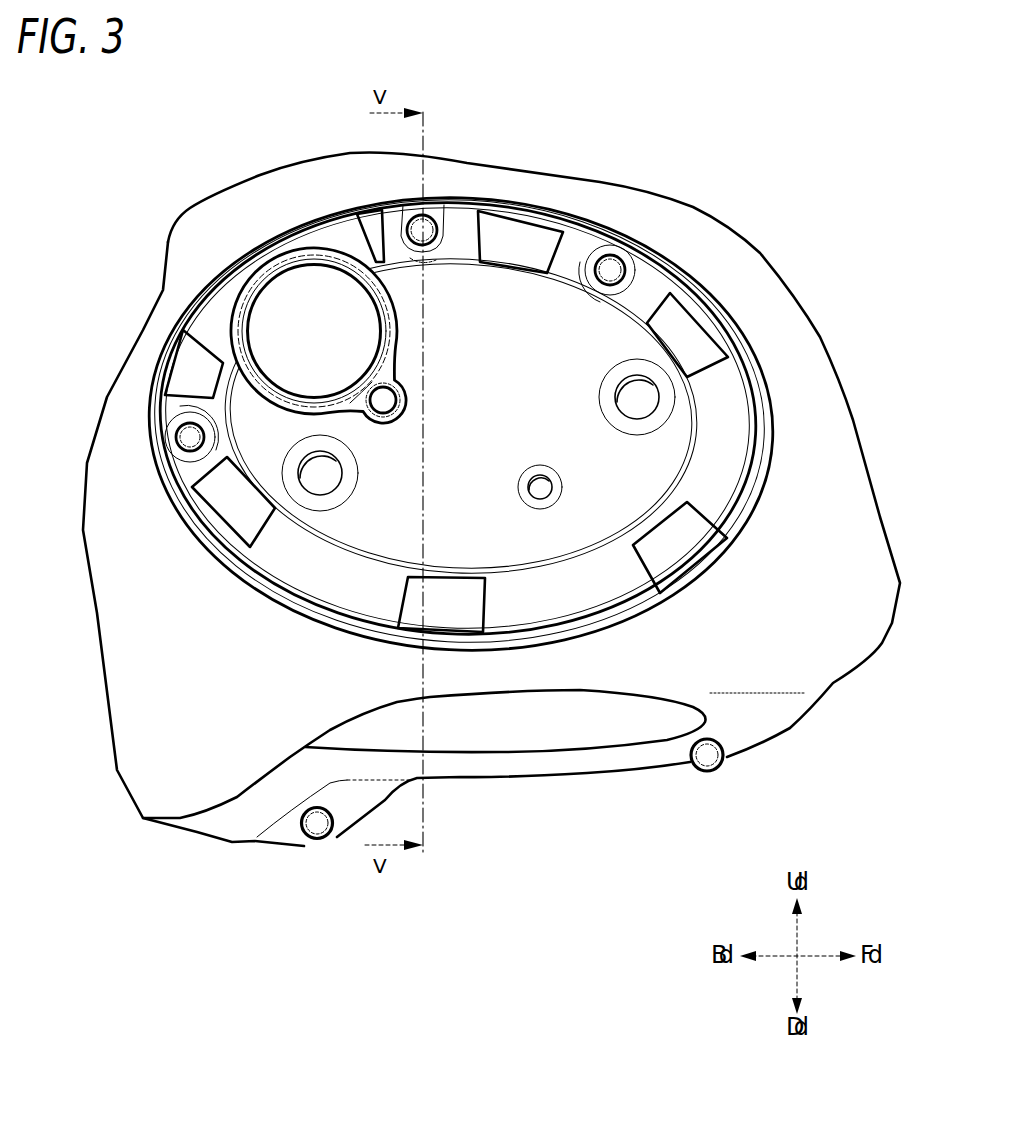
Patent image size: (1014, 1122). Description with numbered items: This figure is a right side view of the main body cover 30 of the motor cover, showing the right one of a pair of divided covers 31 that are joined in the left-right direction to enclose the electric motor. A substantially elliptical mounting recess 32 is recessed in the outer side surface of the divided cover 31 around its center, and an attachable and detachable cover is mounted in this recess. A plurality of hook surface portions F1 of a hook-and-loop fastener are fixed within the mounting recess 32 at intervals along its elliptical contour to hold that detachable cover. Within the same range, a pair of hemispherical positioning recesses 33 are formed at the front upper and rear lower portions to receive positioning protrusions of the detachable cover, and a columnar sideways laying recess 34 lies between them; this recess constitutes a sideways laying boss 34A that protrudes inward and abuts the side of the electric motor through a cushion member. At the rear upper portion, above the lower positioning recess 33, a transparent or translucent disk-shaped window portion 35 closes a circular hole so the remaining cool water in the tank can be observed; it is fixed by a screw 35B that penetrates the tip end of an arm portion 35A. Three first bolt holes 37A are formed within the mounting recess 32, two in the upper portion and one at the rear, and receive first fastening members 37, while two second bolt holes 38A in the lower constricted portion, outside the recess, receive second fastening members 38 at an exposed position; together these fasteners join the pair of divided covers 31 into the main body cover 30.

The main body cover 30 is at (794, 209).
The divided cover 31 is at (835, 456).
The mounting recess 32 is at (765, 455).
The positioning recess 33 is at (632, 388).
The sideways laying recess 34 is at (535, 483).
The sideways laying boss 34A is at (540, 487).
The window portion 35 is at (276, 302).
The arm portion 35A is at (358, 404).
The screw 35B is at (388, 408).
The first fastening member 37 is at (430, 222).
The first bolt hole 37A is at (433, 258).
The second fastening member 38 is at (716, 774).
The second bolt hole 38A is at (682, 760).
The hook surface portion F1 is at (372, 214).